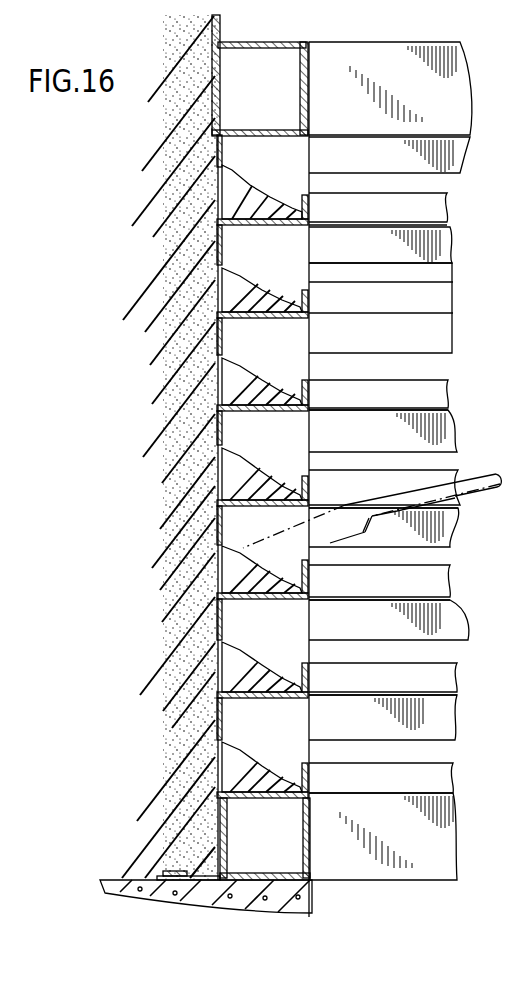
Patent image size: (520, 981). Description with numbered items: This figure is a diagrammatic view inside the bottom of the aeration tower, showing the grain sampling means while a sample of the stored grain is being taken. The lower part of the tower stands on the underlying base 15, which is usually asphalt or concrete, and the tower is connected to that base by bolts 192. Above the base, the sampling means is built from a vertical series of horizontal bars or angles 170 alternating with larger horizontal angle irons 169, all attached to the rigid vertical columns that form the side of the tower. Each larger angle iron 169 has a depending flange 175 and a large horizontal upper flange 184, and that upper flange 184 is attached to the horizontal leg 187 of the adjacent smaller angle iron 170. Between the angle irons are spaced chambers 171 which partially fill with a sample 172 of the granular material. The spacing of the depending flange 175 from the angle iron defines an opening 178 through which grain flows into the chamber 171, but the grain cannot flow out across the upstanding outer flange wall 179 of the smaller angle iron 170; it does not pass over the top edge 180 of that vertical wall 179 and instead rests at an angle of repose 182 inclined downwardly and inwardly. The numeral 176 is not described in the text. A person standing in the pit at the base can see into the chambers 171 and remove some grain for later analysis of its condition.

The base 15 is at (312, 898).
The horizontal angle iron 169 is at (205, 246).
The horizontal bar or angle 170 is at (216, 420).
The chamber 171 is at (300, 306).
The sample 172 is at (250, 468).
The depending flange 175 is at (223, 337).
The recess lower surface 176 is at (248, 385).
The opening 178 is at (206, 379).
The upstanding outer flange wall 179 is at (310, 383).
The top edge 180 is at (308, 262).
The angle of repose 182 is at (216, 347).
The horizontal upper flange 184 is at (248, 222).
The horizontal leg 187 is at (296, 414).
The bolts 192 is at (162, 865).